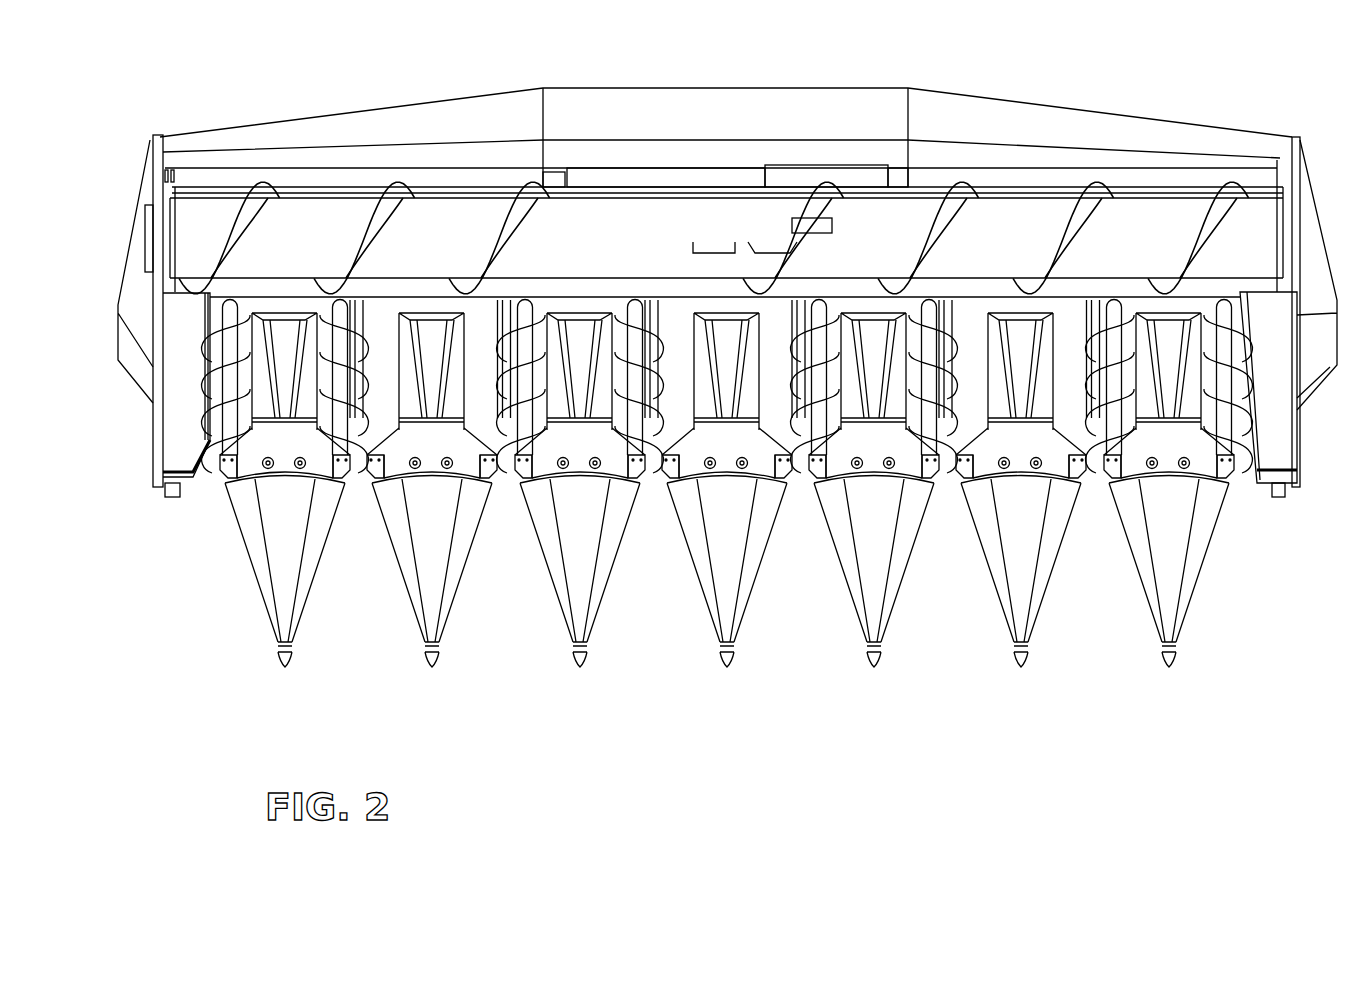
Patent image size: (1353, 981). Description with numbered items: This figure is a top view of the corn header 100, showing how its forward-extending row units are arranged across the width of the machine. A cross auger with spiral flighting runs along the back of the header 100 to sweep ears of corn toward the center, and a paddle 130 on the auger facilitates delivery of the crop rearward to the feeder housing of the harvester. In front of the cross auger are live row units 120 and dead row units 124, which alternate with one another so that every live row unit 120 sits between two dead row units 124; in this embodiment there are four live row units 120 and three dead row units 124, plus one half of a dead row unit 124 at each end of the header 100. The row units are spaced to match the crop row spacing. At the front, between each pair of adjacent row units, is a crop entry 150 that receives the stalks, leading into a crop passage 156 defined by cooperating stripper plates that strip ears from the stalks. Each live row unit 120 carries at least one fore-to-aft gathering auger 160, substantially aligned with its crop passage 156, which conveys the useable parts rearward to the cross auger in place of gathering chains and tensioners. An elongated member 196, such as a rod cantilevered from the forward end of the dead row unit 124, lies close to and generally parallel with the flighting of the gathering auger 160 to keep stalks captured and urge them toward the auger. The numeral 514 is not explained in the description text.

The header 100 is at (720, 369).
The live row unit 120 is at (285, 432).
The dead row unit 124 is at (178, 432).
The paddle 130 is at (812, 222).
The crop entry 150 is at (340, 672).
The crop passage 156 is at (361, 492).
The gathering auger 160 is at (230, 302).
The elongated member 196 is at (205, 477).
The stalk roll assembly 514 is at (453, 362).